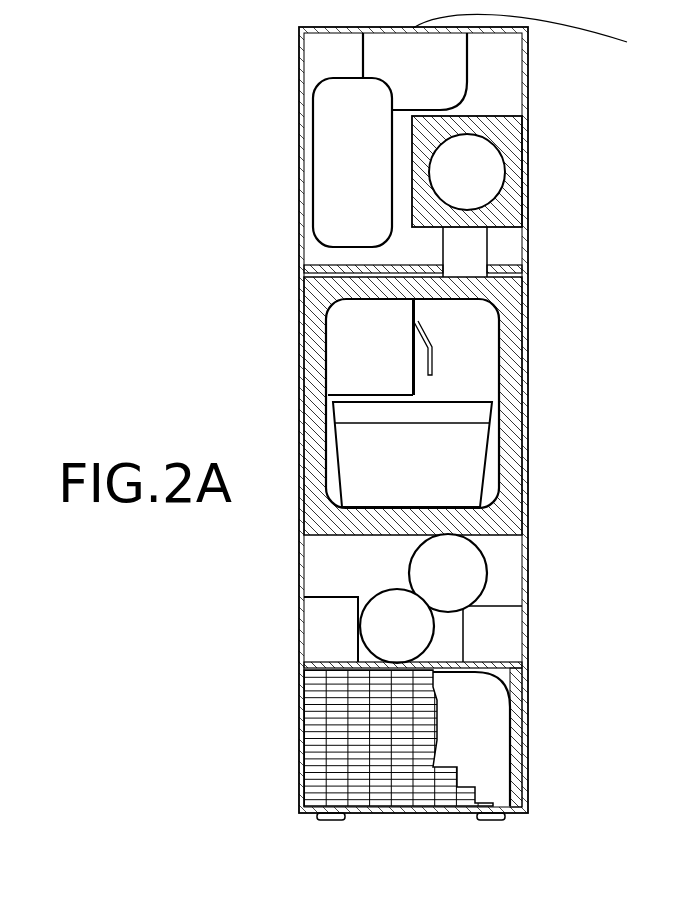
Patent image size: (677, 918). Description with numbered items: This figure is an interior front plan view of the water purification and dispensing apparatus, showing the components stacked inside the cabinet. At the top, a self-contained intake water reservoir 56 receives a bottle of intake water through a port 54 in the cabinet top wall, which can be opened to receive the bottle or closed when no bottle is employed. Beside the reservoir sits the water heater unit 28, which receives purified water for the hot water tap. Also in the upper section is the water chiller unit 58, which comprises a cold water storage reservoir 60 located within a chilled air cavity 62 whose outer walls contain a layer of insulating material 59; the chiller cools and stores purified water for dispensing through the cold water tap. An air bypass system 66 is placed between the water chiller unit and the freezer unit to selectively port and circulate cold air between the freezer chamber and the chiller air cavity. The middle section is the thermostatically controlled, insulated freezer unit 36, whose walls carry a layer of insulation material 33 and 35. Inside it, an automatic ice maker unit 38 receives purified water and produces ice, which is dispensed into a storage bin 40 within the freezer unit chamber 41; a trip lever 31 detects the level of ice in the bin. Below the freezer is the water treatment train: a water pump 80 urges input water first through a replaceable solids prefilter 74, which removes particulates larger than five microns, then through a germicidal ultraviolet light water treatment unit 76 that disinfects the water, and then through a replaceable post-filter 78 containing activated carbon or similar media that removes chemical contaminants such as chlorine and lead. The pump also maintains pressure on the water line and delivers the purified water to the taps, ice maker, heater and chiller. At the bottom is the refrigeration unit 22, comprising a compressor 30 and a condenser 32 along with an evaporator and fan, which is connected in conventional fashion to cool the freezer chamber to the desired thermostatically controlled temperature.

The refrigeration unit 22 is at (507, 680).
The water heater unit 28 is at (337, 156).
The compressor 30 is at (485, 753).
The trip lever 31 is at (433, 364).
The condenser 32 is at (358, 725).
The insulation material 33 is at (510, 432).
The insulation 35 is at (328, 324).
The freezer unit 36 is at (536, 510).
The ice maker unit 38 is at (369, 349).
The storage bin 40 is at (373, 433).
The freezer unit chamber 41 is at (470, 330).
The port 54 is at (540, 36).
The intake water reservoir 56 is at (398, 59).
The water chiller unit 58 is at (535, 179).
The insulating material 59 is at (510, 208).
The cold water storage reservoir 60 is at (467, 170).
The chilled air cavity 62 is at (508, 127).
The air bypass system 66 is at (473, 249).
The solids prefilter 74 is at (388, 627).
The germicidal ultraviolet light water treatment unit 76 is at (323, 614).
The post-filter 78 is at (462, 569).
The water pump 80 is at (488, 637).